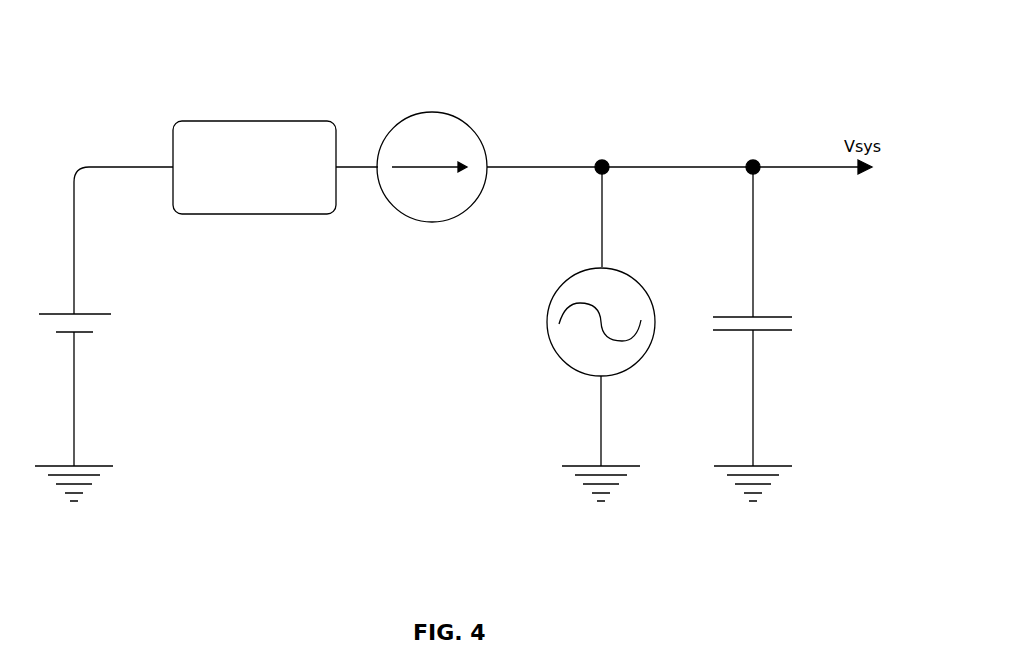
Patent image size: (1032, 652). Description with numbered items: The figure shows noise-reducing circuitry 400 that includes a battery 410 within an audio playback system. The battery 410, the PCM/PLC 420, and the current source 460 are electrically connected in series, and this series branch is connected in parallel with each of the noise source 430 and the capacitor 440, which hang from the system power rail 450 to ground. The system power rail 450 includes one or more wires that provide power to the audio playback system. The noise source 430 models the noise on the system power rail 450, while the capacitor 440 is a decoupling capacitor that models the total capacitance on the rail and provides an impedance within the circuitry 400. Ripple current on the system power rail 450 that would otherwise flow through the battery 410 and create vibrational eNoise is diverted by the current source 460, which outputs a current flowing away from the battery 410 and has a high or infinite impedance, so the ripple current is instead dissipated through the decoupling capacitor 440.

The noise-reducing circuitry 400 is at (585, 52).
The battery 410 is at (108, 298).
The PCM/PLC 420 is at (245, 105).
The noise source 430 is at (550, 272).
The capacitor 440 is at (793, 262).
The system power rail 450 is at (865, 120).
The current source 460 is at (422, 100).